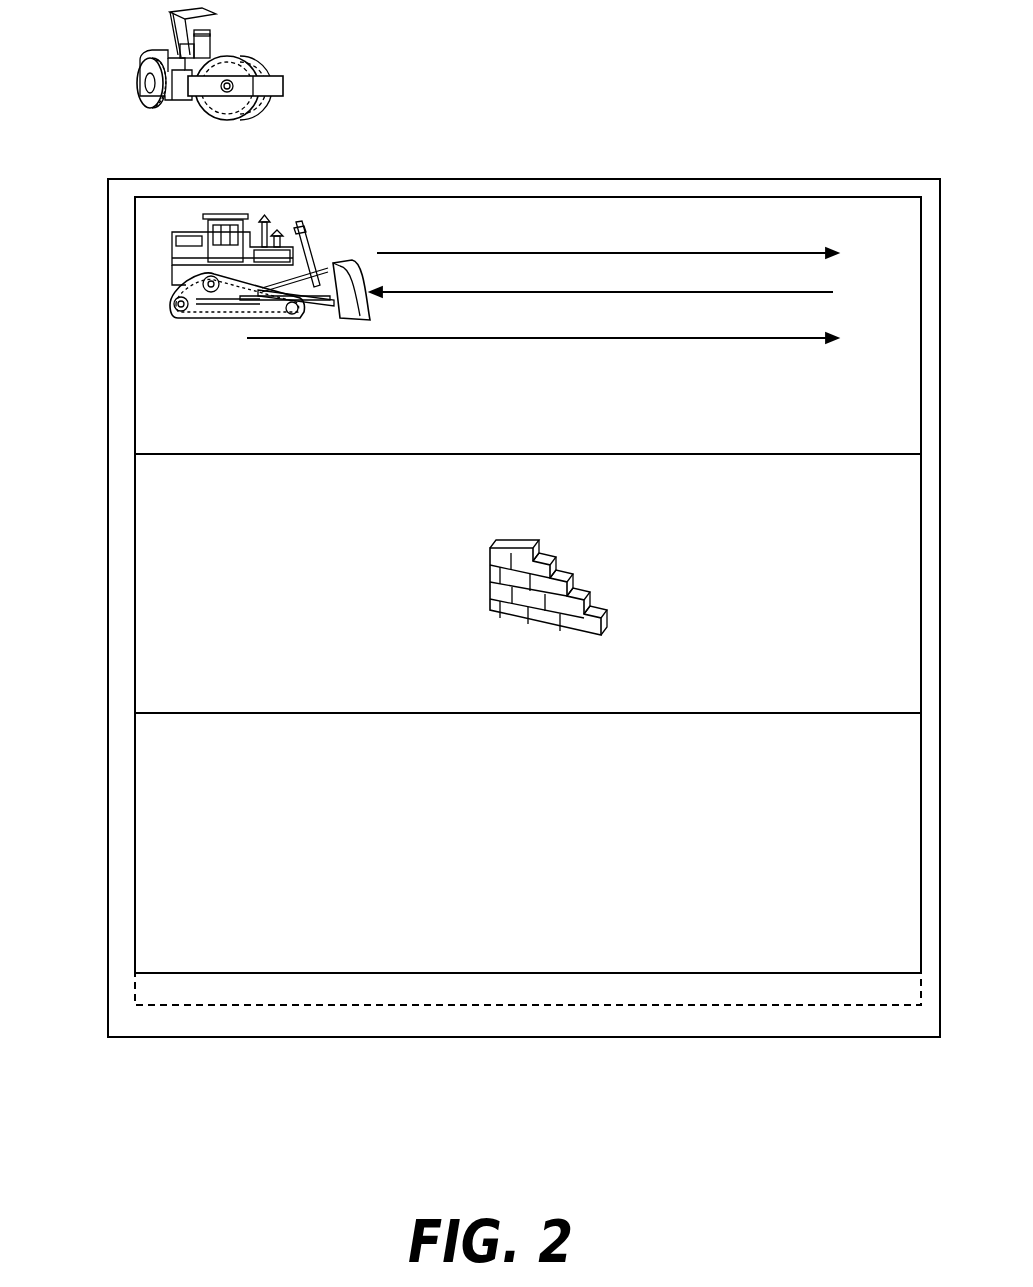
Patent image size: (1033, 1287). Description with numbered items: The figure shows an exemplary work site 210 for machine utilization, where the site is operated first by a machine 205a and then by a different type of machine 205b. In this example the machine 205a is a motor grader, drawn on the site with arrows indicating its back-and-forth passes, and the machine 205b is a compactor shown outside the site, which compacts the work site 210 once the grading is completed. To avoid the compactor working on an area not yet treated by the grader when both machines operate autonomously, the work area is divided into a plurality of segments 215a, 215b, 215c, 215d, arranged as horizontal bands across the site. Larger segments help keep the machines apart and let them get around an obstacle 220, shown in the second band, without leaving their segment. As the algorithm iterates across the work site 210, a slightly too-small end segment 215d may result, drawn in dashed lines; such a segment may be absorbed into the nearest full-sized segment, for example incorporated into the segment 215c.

The machine 205a is at (318, 263).
The machine 205b is at (272, 62).
The work site 210 is at (108, 197).
The segment 215a is at (135, 325).
The segment 215b is at (135, 593).
The segment 215c is at (135, 832).
The segment 215d is at (135, 990).
The obstacle 220 is at (490, 562).